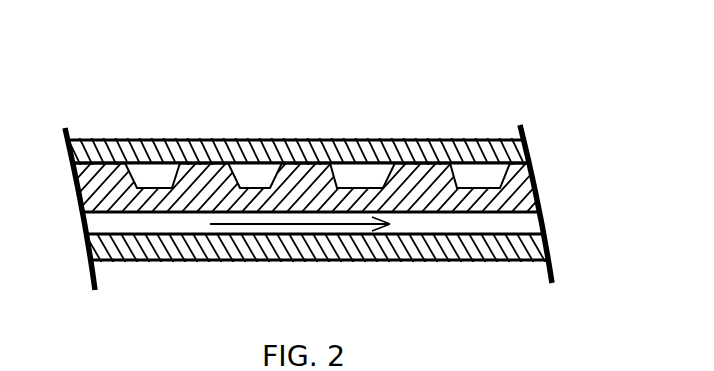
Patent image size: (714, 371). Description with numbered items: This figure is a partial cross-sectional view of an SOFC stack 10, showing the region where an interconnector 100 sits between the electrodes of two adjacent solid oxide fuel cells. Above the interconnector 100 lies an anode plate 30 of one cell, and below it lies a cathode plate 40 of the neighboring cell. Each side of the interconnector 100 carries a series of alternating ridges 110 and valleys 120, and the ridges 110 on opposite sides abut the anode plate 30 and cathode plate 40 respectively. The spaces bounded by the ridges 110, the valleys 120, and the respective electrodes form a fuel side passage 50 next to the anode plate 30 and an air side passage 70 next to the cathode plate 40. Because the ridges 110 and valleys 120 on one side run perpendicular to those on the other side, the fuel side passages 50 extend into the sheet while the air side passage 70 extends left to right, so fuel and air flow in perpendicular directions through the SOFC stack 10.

The SOFC stack 10 is at (100, 78).
The anode plate 30 is at (478, 140).
The cathode plate 40 is at (502, 261).
The fuel side passage 50 is at (158, 172).
The air side passage 70 is at (100, 227).
The interconnector 100 is at (319, 191).
The ridges 110 is at (305, 154).
The valleys 120 is at (262, 172).